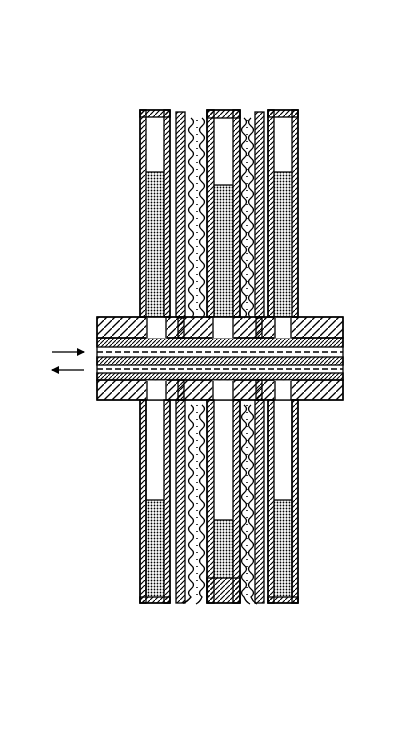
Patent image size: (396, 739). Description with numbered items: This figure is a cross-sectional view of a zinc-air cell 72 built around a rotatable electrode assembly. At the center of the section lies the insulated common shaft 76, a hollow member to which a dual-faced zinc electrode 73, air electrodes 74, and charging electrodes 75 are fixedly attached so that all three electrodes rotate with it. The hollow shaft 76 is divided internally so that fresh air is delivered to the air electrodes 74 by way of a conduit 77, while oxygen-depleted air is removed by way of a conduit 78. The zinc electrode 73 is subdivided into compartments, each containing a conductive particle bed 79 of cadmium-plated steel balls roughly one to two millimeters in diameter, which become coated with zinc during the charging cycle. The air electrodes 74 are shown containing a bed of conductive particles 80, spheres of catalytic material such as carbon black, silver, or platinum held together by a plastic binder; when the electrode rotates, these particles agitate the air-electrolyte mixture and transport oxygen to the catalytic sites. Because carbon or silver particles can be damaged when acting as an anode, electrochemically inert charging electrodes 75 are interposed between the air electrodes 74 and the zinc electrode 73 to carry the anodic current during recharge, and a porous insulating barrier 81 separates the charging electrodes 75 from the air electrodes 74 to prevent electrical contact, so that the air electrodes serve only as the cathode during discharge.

The zinc-air cell 72 is at (293, 92).
The dual-faced zinc electrode 73 is at (222, 106).
The air electrodes 74 is at (150, 108).
The charging electrodes 75 is at (196, 120).
The insulated common shaft 76 is at (344, 323).
The conduit 77 is at (304, 318).
The conduit 78 is at (137, 402).
The conductive particle bed 79 is at (297, 184).
The bed of conductive particles 80 is at (141, 483).
The porous insulating barrier 81 is at (158, 113).